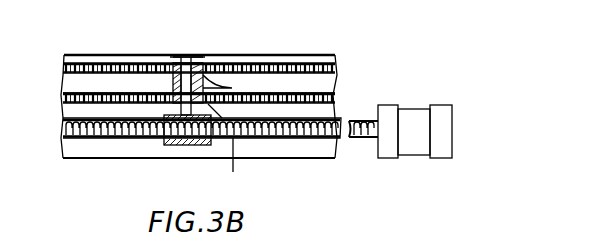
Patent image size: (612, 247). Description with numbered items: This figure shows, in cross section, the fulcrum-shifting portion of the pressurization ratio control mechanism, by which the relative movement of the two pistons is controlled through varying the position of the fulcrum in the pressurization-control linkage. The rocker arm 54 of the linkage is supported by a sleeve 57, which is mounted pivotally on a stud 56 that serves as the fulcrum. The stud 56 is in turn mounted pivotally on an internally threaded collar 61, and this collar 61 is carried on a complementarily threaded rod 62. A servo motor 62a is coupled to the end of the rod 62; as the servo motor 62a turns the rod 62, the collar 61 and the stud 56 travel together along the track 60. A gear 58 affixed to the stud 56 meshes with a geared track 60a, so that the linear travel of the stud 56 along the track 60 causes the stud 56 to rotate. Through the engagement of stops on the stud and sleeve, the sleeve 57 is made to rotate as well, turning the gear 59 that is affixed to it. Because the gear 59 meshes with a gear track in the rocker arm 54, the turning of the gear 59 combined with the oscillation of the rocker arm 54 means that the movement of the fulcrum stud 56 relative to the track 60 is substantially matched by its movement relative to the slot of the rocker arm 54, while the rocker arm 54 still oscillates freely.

The rocker arm 54 is at (256, 59).
The stud 56 is at (188, 63).
The sleeve 57 is at (232, 63).
The gear 58 is at (233, 160).
The gear 59 is at (162, 63).
The track 60 is at (317, 155).
The geared track 60a is at (76, 82).
The internally threaded collar 61 is at (195, 145).
The threaded rod 62 is at (118, 138).
The servo motor 62a is at (417, 120).